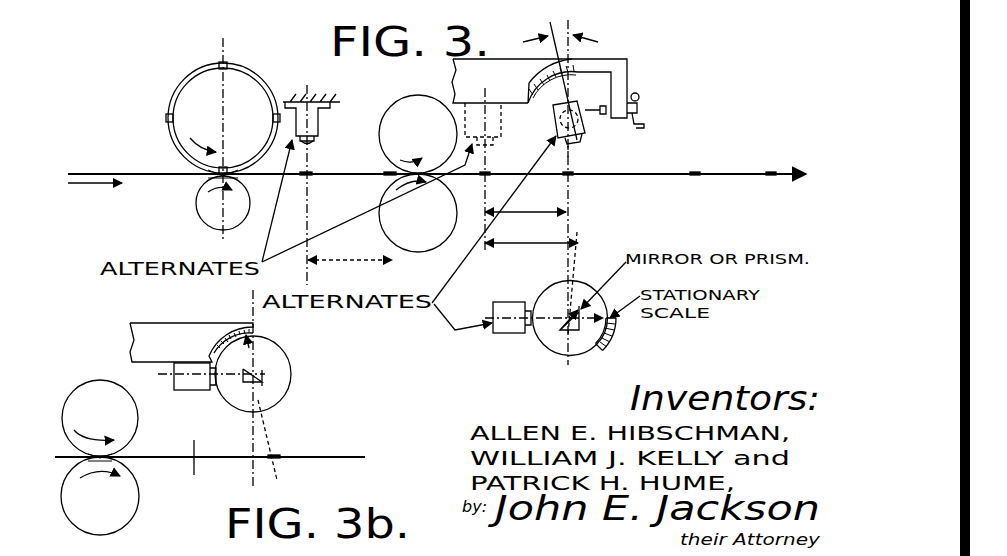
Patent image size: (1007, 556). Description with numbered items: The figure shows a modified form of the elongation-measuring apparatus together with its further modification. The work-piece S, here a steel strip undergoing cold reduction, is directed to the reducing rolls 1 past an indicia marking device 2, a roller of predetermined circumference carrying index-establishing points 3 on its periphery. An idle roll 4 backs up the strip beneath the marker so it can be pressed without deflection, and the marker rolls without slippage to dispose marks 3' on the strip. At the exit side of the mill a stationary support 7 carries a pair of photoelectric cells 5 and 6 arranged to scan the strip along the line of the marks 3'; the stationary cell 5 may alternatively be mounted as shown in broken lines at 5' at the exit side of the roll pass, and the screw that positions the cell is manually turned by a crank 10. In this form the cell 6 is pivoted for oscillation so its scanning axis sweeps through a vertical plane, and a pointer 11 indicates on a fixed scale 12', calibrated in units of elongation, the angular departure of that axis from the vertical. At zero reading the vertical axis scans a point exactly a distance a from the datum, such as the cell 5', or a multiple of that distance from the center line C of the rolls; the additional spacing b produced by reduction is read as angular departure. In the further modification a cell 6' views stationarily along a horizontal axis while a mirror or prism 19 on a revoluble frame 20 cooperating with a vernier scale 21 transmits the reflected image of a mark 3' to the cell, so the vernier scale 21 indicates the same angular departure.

In FIG. 3, the reducing rolls 1 is at (392, 115).
In FIG. 3b, the reducing rolls 1 is at (88, 382).
In FIG. 3, the indicia marking device 2 is at (172, 88).
In FIG. 3, the index-establishing points 3 is at (205, 106).
In FIG. 3, the idle roll 4 is at (203, 208).
In FIG. 3, the photoelectric cell 5 is at (318, 119).
In FIG. 3, the photoelectric cell 6 is at (576, 91).
In FIG. 3, the stationary support 7 is at (453, 78).
In FIG. 3b, the stationary support 7 is at (180, 323).
In FIG. 3, the crank 10 is at (639, 109).
In FIG. 3, the pointer 11 is at (530, 92).
In FIG. 3, the fixed scale 12' is at (605, 43).
In FIG. 3, the mirror or prism 19 is at (565, 326).
In FIG. 3b, the mirror or prism 19 is at (262, 377).
In FIG. 3, the revoluble frame 20 is at (556, 350).
In FIG. 3b, the revoluble frame 20 is at (294, 380).
In FIG. 3, the vernier scale 21 is at (611, 346).
In FIG. 3b, the vernier scale 21 is at (248, 330).
In FIG. 3, the marks 3' is at (538, 158).
In FIG. 3b, the marks 3' is at (251, 449).
In FIG. 3, the stationary cell (alternate position) 5' is at (495, 124).
In FIG. 3, the cell 6' is at (508, 333).
In FIG. 3b, the cell 6' is at (183, 389).
In FIG. 3, the work-piece S is at (437, 168).
In FIG. 3, the center line of the rolls C is at (415, 218).
In FIG. 3, the distance a is at (443, 226).
In FIG. 3, the distance b is at (560, 103).